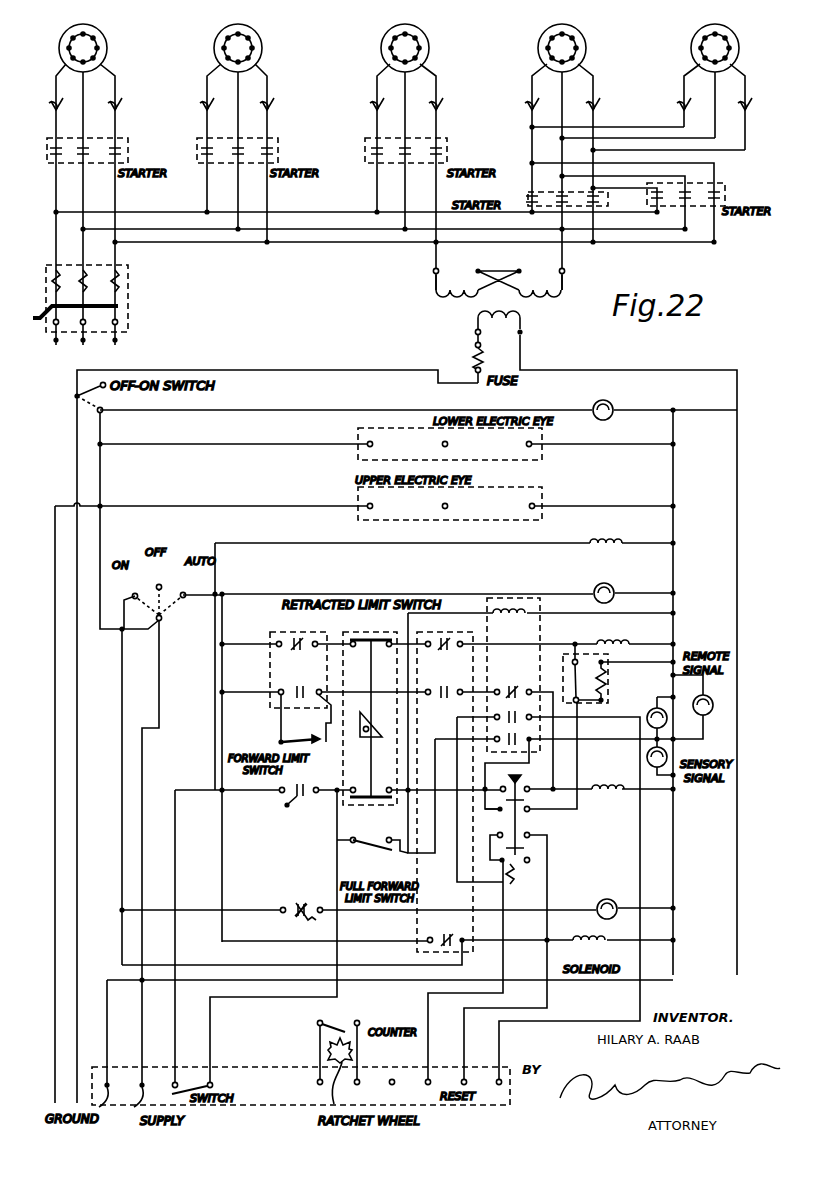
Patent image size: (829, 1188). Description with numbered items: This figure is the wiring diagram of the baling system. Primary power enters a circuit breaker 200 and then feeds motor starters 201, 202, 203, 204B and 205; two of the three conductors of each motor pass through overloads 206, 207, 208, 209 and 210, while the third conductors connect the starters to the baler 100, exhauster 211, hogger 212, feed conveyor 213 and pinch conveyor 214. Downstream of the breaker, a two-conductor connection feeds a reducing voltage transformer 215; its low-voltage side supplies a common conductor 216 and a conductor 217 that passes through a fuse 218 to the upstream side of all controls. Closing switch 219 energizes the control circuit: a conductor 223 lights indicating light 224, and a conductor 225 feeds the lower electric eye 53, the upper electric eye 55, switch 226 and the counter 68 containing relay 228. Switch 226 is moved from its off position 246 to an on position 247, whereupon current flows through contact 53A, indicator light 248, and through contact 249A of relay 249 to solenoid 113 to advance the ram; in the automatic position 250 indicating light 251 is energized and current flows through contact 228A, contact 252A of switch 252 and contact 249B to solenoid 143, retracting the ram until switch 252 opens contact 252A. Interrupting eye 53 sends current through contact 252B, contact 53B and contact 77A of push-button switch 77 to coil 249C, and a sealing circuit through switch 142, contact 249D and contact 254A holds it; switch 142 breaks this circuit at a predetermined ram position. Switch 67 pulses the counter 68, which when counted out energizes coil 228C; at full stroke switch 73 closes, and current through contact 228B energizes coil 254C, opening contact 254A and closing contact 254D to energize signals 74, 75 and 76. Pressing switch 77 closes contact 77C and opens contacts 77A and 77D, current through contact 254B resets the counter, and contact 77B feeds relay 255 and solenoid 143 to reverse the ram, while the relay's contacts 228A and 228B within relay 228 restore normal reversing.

The baler 100 is at (102, 48).
The exhauster 211 is at (262, 52).
The hogger 212 is at (429, 42).
The feed conveyor 213 is at (586, 50).
The pinch conveyor 214 is at (691, 42).
The overload 206 is at (130, 93).
The overload 207 is at (282, 106).
The overload 208 is at (450, 98).
The overload 209 is at (608, 106).
The overload 210 is at (762, 80).
The motor starter 201 is at (118, 151).
The motor starter 202 is at (270, 151).
The motor starter 203 is at (440, 151).
The motor starter 204B is at (551, 196).
The motor starter 205 is at (718, 195).
The circuit breaker 200 is at (128, 305).
The reducing voltage transformer 215 is at (474, 306).
The fuse 218 is at (472, 358).
The common conductor 216 is at (645, 367).
The conductor 217 is at (352, 370).
The switch 219 is at (77, 395).
The conductor 223 is at (274, 413).
The indicating light 224 is at (610, 402).
The conductor 225 is at (168, 444).
The lower electric eye 53 is at (426, 430).
The upper electric eye 55 is at (496, 492).
The coil 228C is at (612, 540).
The indicating light 251 is at (612, 585).
The coil 254C is at (512, 618).
The solenoid 143 is at (612, 640).
The relay 249 is at (446, 636).
The relay 228 is at (270, 664).
The contact 228A is at (318, 632).
The contact 228B is at (320, 680).
The contact 252A is at (390, 640).
The contact 252B is at (382, 790).
The switch 252 is at (380, 723).
The contact 249B is at (460, 662).
The contact 249D is at (443, 684).
The contact 254A is at (512, 685).
The contact 254B is at (512, 710).
The contact 254D is at (508, 733).
The switch 142 is at (280, 723).
The relay 255 is at (606, 680).
The signal 74 is at (647, 714).
The signal 75 is at (668, 755).
The remote signal 76 is at (710, 698).
The contact 53B is at (310, 773).
The contact 53A is at (322, 888).
The coil 249C is at (598, 786).
The contact 77A is at (517, 813).
The switch 77 is at (540, 822).
The contact 77B is at (530, 804).
The contact 77C is at (530, 852).
The contact 77D is at (530, 836).
The switch 73 is at (400, 855).
The indicator light 248 is at (600, 900).
The contact 249A is at (464, 924).
The solenoid 113 is at (588, 946).
The off position 246 is at (170, 572).
The on position 247 is at (133, 588).
The automatic position 250 is at (185, 588).
The switch 226 is at (155, 648).
The switch 67 is at (333, 1016).
The counter 68 is at (378, 1063).